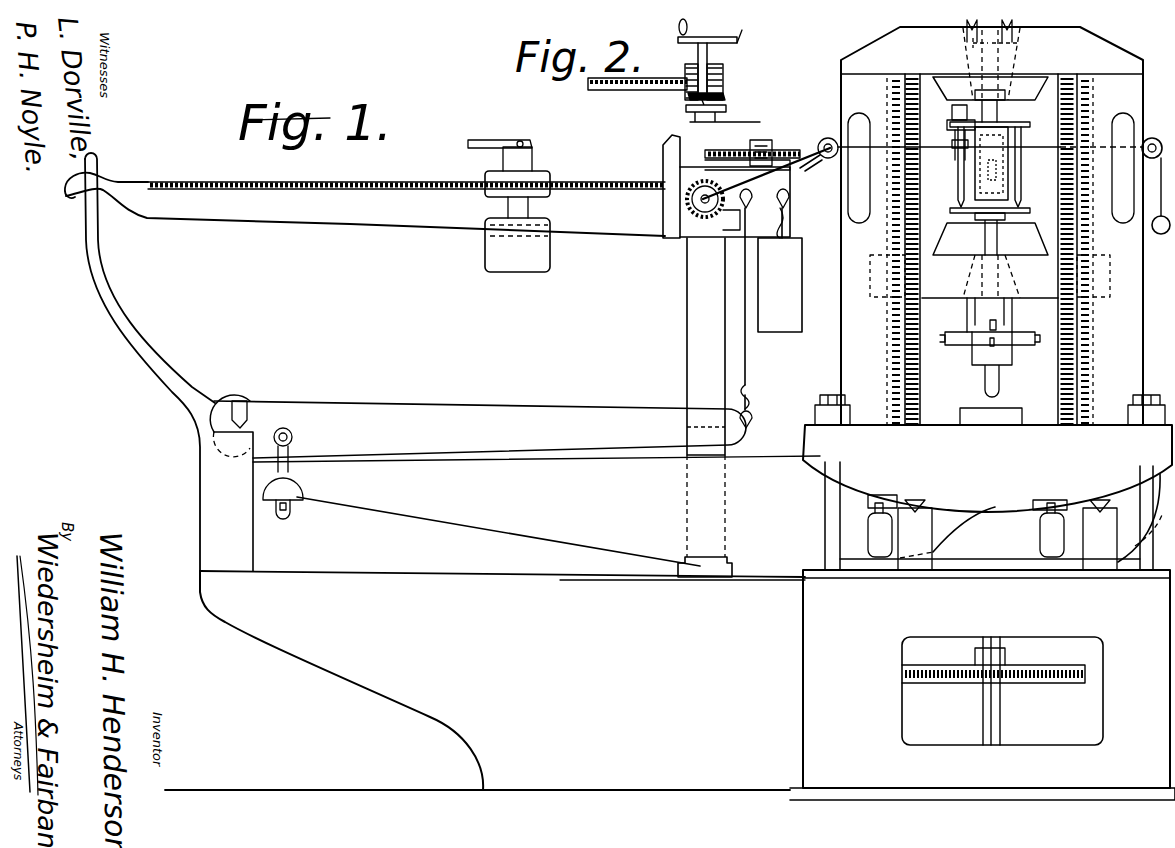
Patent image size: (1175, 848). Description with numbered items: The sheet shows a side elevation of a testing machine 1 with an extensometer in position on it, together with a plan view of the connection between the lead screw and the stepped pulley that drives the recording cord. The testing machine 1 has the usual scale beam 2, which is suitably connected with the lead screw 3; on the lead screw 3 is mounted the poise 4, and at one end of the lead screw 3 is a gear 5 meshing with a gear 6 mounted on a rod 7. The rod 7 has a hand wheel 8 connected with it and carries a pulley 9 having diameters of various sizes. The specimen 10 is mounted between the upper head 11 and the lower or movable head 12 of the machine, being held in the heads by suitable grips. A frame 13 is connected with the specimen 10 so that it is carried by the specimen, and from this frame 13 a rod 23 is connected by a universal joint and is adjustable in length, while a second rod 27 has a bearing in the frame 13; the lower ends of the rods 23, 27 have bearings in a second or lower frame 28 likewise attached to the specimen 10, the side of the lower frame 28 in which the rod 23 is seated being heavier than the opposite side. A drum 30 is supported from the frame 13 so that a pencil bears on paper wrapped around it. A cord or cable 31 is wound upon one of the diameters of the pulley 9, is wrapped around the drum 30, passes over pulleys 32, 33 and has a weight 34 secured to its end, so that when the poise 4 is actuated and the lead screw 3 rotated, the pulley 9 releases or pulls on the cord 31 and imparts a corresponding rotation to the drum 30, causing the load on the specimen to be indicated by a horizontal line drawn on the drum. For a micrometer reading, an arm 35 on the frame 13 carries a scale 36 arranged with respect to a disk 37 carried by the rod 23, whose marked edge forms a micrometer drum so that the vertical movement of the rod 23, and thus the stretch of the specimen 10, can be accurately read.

In FIG. 1, the testing machine 1 is at (630, 413).
In FIG. 1, the scale beam 2 is at (365, 204).
In FIG. 1, the lead screw 3 is at (407, 174).
In FIG. 2, the lead screw 3 is at (645, 90).
In FIG. 1, the poise 4 is at (520, 281).
In FIG. 1, the gear 5 is at (690, 235).
In FIG. 2, the gear 5 is at (690, 66).
In FIG. 1, the gear 6 is at (710, 220).
In FIG. 2, the gear 6 is at (722, 88).
In FIG. 1, the rod 7 is at (700, 215).
In FIG. 2, the rod 7 is at (707, 71).
In FIG. 2, the hand wheel 8 is at (710, 31).
In FIG. 1, the pulley 9 is at (723, 222).
In FIG. 2, the pulley 9 is at (688, 110).
In FIG. 1, the specimen 10 is at (1005, 123).
In FIG. 1, the upper head 11 is at (1011, 60).
In FIG. 1, the lower or movable head 12 is at (1010, 298).
In FIG. 1, the frame 13 is at (990, 88).
In FIG. 1, the rod 23 is at (958, 195).
In FIG. 1, the second rod 27 is at (1020, 180).
In FIG. 1, the second or lower frame 28 is at (968, 215).
In FIG. 1, the drum 30 is at (968, 172).
In FIG. 1, the cord or cable 31 is at (830, 148).
In FIG. 1, the pulley 32 is at (815, 171).
In FIG. 1, the pulley 33 is at (1153, 142).
In FIG. 1, the weight 34 is at (1161, 234).
In FIG. 1, the arm 35 is at (1168, 187).
In FIG. 1, the scale 36 is at (951, 135).
In FIG. 1, the disk 37 is at (955, 165).